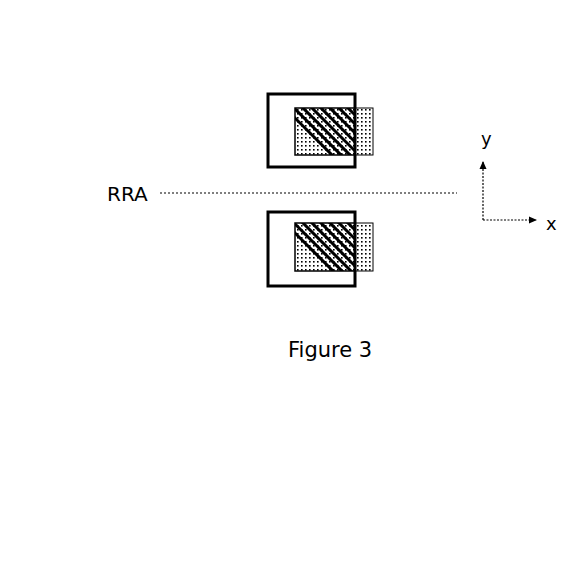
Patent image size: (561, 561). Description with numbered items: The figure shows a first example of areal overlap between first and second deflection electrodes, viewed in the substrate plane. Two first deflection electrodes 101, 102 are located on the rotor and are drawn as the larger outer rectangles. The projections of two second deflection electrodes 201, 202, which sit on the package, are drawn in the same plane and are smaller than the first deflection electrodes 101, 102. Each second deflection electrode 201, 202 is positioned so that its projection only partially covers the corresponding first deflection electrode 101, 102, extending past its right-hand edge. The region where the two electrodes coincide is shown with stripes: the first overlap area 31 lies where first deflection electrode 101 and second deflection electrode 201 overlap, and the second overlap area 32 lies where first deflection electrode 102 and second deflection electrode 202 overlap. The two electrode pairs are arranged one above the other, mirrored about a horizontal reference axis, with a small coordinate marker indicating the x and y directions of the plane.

The first deflection electrode 101 is at (266, 128).
The first deflection electrode 102 is at (266, 257).
The first overlap area 31 is at (327, 121).
The second overlap area 32 is at (319, 256).
The second deflection electrode 201 is at (374, 134).
The second deflection electrode 202 is at (374, 249).